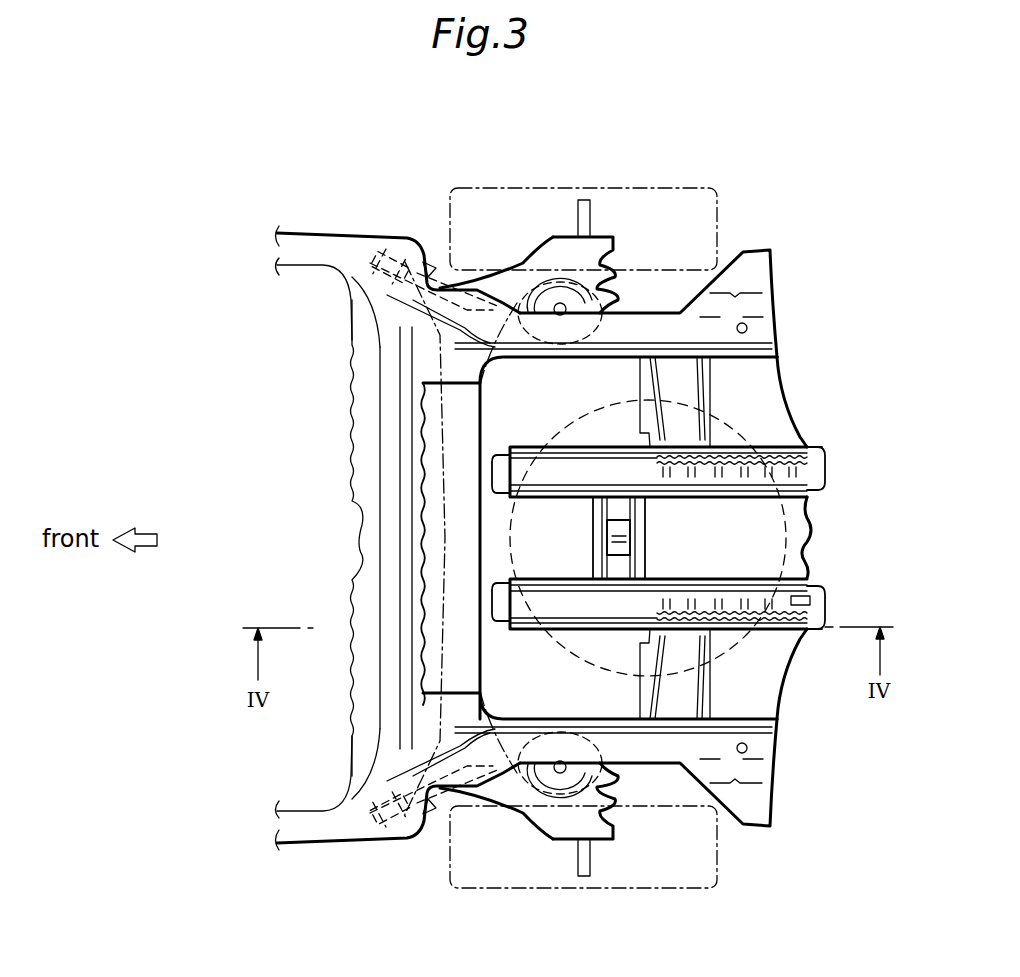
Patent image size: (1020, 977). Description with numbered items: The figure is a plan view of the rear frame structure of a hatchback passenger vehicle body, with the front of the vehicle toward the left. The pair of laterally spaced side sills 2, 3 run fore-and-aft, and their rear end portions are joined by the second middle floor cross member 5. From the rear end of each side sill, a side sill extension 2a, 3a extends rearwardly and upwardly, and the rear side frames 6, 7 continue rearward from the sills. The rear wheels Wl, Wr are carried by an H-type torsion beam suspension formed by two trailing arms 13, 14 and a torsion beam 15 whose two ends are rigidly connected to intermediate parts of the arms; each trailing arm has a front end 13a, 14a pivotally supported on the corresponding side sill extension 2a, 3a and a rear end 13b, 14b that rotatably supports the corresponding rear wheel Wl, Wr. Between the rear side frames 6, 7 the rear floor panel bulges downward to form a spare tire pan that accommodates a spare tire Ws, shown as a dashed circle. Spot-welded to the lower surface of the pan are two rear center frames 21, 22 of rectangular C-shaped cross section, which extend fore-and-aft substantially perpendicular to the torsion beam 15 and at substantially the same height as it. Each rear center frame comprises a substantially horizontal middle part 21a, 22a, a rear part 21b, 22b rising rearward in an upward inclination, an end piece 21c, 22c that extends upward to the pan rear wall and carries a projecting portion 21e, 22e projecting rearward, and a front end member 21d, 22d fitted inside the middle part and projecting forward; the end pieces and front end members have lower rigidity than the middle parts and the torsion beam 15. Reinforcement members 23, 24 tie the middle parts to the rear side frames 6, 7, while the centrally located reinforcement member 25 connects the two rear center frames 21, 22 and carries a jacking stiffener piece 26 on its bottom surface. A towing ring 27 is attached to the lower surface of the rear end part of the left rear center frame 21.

The side sill 2 is at (297, 833).
The side sill extension 2a is at (345, 833).
The side sill 3 is at (297, 243).
The side sill extension 3a is at (357, 248).
The second middle floor cross member 5 is at (362, 405).
The rear side frame 6 is at (768, 745).
The rear side frame 7 is at (762, 330).
The trailing arm 13 is at (535, 812).
The front end of trailing arm 13a is at (400, 820).
The rear end of trailing arm 13b is at (600, 845).
The trailing arm 14 is at (527, 265).
The front end of trailing arm 14a is at (400, 256).
The rear end of trailing arm 14b is at (600, 237).
The torsion beam 15 is at (455, 525).
The rear center frame 21 is at (690, 622).
The middle part 21a is at (608, 627).
The rear part 21b is at (750, 620).
The end piece 21c is at (813, 588).
The front end member 21d is at (503, 613).
The projecting portion 21e is at (817, 608).
The rear center frame 22 is at (691, 432).
The middle part 22a is at (600, 457).
The rear part 22b is at (768, 473).
The end piece 22c is at (813, 470).
The front end member 22d is at (500, 460).
The projecting portion 22e is at (848, 436).
The reinforcement member 23 is at (705, 695).
The reinforcement member 24 is at (710, 373).
The reinforcement member 25 is at (806, 512).
The jacking stiffener piece 26 is at (610, 525).
The towing ring 27 is at (808, 627).
The rear wheel Wr is at (655, 185).
The rear wheel Wl is at (657, 888).
The spare tire Ws is at (648, 555).